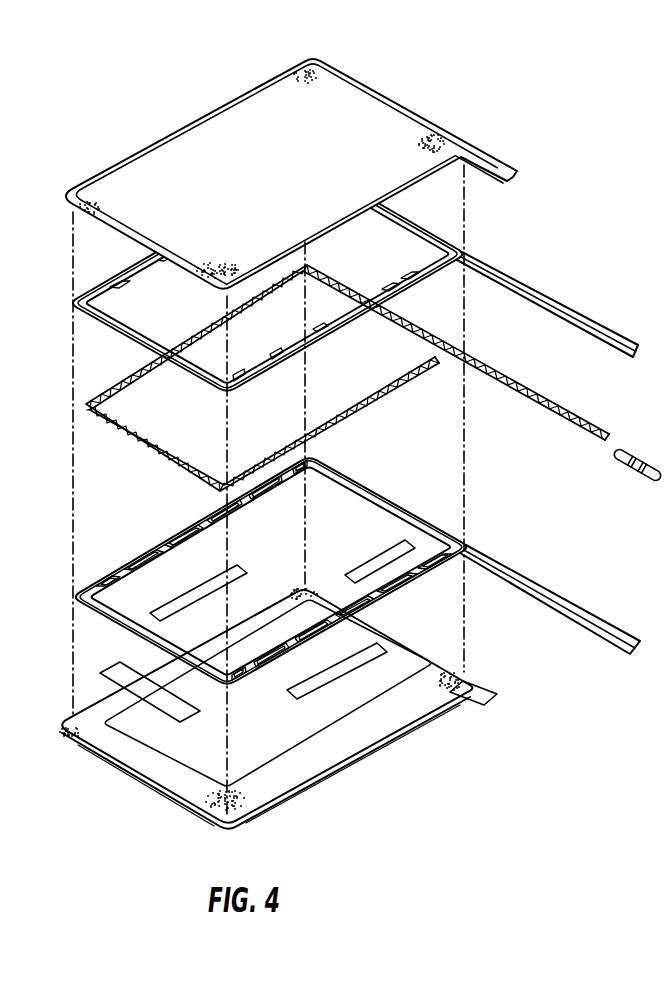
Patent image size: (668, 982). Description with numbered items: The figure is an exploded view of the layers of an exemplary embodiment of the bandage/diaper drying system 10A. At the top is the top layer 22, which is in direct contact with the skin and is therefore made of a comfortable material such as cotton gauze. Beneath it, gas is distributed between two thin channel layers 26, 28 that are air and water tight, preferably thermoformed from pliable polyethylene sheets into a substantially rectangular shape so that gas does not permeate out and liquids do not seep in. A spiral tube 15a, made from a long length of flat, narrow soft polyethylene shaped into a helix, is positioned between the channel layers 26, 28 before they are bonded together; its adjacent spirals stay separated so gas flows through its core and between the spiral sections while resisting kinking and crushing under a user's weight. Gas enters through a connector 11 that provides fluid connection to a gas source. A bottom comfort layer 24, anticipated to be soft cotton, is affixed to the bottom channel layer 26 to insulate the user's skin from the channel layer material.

The bandage/diaper drying system 10A is at (576, 206).
The top layer 22 is at (334, 61).
The channel layer 28 is at (430, 228).
The spiral tube 15a is at (524, 388).
The connector 11 is at (638, 470).
The bottom channel layer 26 is at (490, 556).
The bottom comfort layer 24 is at (427, 646).